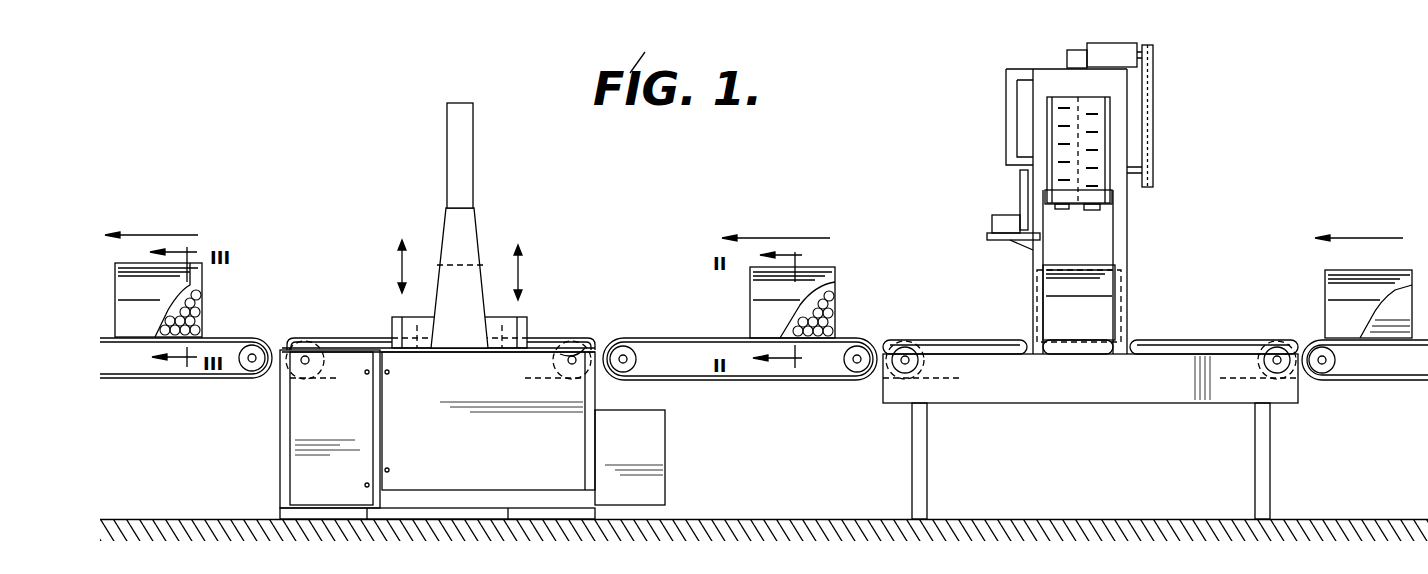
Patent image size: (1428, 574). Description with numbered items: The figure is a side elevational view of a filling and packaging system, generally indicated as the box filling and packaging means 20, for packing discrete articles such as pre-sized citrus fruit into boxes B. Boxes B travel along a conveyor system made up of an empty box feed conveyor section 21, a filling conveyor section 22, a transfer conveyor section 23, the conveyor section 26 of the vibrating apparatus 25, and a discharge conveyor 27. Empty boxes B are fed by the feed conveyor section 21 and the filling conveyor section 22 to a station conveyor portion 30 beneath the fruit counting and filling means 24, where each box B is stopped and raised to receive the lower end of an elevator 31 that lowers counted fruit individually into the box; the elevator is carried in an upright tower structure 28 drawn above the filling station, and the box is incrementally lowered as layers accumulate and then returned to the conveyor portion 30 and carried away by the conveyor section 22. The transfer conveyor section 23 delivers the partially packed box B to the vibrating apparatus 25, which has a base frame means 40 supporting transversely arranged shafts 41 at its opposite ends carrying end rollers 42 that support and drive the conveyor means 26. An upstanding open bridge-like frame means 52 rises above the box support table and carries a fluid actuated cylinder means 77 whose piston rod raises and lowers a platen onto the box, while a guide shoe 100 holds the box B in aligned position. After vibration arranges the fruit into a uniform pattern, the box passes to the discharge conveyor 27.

The box filling and packaging means 20 is at (1182, 150).
The empty box feed conveyor section 21 is at (1360, 382).
The filling conveyor section 22 is at (1215, 340).
The transfer conveyor section 23 is at (690, 337).
The fruit counting and filling means 24 is at (1002, 119).
The vibrating apparatus 25 is at (508, 237).
The conveyor section 26 is at (353, 337).
The discharge conveyor 27 is at (223, 337).
The tower 28 is at (1130, 320).
The station conveyor portion 30 is at (1075, 355).
The elevator 31 is at (1110, 202).
The base frame means 40 is at (312, 422).
The shafts 41 is at (306, 357).
The end rollers 42 is at (556, 345).
The open bridge-like frame means 52 is at (482, 250).
The fluid actuated cylinder means 77 is at (475, 153).
The guide shoe 100 is at (508, 325).
The box B is at (118, 305).